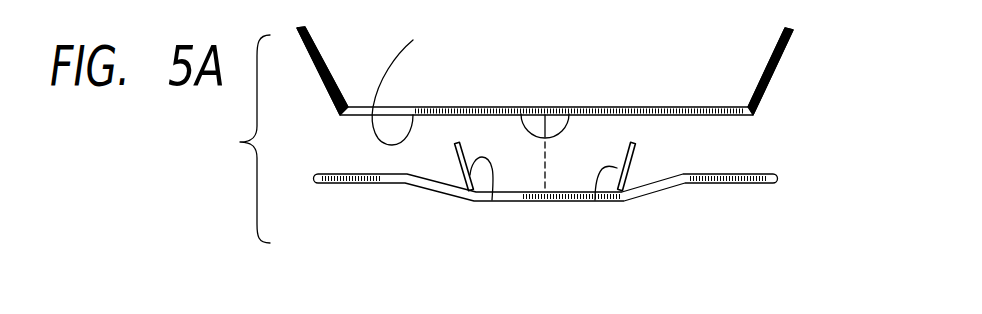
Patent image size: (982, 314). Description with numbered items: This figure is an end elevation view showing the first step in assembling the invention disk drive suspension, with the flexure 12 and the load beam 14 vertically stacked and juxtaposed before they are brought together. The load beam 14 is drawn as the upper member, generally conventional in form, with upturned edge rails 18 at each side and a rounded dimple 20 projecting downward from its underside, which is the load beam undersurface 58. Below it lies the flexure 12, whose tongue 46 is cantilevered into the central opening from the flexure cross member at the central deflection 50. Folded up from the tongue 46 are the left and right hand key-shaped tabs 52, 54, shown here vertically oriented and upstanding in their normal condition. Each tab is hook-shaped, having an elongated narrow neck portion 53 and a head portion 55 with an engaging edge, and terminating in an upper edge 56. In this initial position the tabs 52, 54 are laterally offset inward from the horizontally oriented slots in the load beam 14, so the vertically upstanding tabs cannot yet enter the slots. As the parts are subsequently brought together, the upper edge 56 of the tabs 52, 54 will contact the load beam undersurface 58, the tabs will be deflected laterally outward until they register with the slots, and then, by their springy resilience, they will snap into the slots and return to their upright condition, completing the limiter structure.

The flexure 12 is at (641, 193).
The load beam 14 is at (634, 108).
The edge rails 18 is at (785, 67).
The dimple 20 is at (552, 124).
The tongue 46 is at (510, 168).
The central deflection 50 is at (508, 201).
The left hand tab 52 is at (460, 172).
The neck portion 53 is at (595, 200).
The right hand tab 54 is at (623, 153).
The head portion 55 is at (492, 200).
The upper edge 56 is at (457, 144).
The load beam undersurface 58 is at (408, 84).